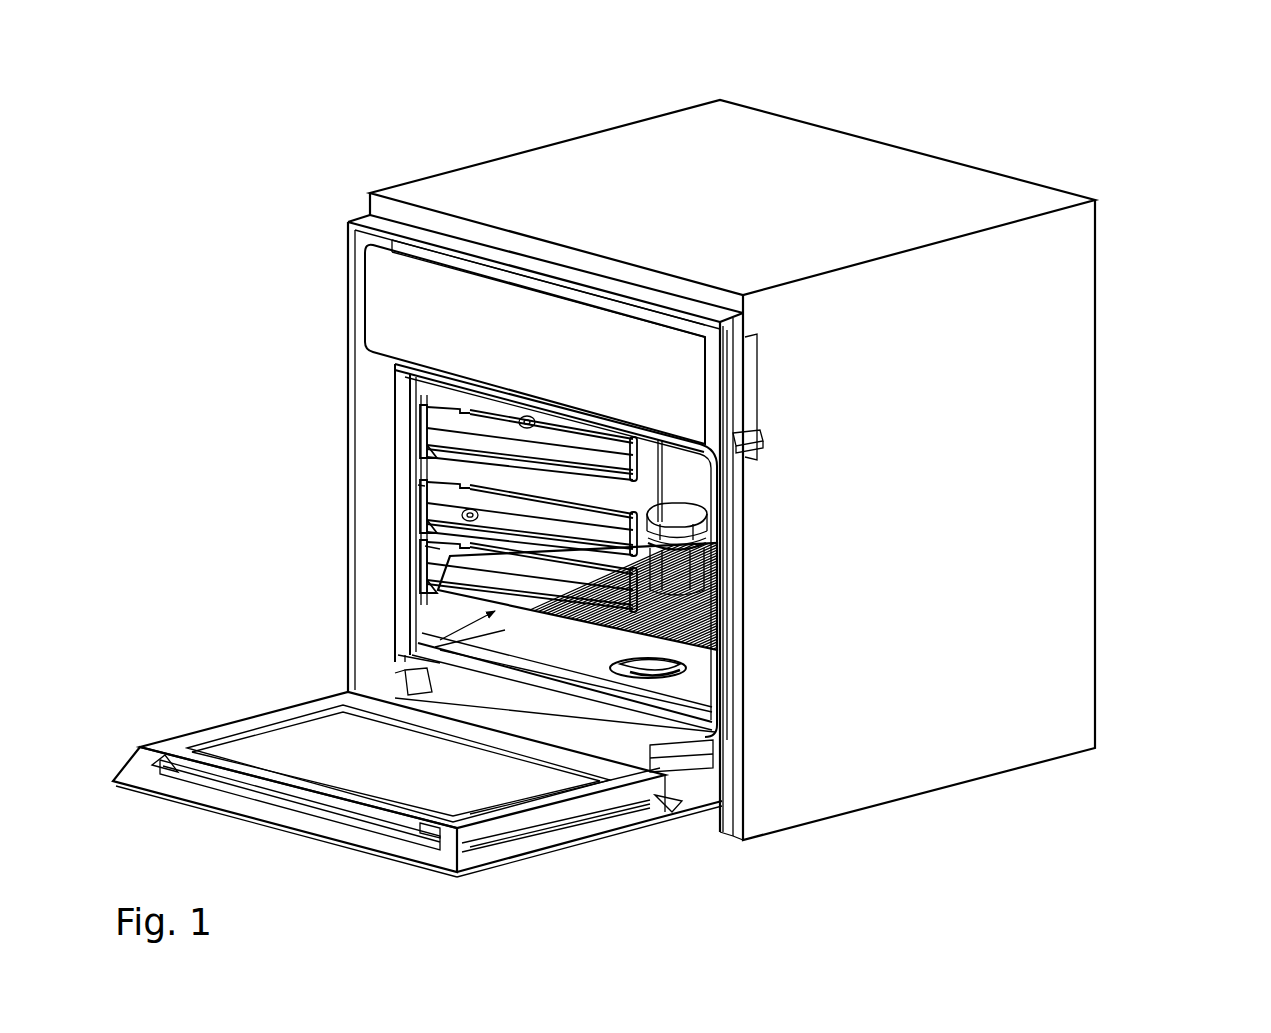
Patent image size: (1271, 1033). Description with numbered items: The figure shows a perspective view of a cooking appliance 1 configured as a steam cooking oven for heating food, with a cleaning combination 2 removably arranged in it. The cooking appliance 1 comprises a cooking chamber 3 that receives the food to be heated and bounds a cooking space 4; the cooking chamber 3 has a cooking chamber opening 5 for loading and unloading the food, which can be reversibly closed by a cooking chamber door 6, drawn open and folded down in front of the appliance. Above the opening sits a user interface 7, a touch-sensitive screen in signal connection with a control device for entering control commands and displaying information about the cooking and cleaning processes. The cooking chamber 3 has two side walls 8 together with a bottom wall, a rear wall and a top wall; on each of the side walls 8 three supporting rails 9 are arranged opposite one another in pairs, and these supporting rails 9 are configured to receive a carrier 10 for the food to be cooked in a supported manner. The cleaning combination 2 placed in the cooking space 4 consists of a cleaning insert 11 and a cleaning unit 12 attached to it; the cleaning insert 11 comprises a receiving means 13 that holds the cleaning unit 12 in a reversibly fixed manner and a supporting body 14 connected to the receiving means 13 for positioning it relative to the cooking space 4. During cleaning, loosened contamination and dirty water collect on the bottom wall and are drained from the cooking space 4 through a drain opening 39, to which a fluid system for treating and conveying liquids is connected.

The cooking appliance 1 is at (906, 126).
The cleaning combination 2 is at (430, 548).
The cooking chamber 3 is at (420, 495).
The cooking space 4 is at (472, 650).
The cooking chamber opening 5 is at (420, 475).
The cooking chamber door 6 is at (280, 716).
The user interface 7 is at (393, 308).
The side walls 8 is at (422, 397).
The supporting rails 9 is at (448, 490).
The carrier for food to be cooked 10 is at (440, 634).
The cleaning insert 11 is at (720, 647).
The cleaning unit 12 is at (700, 568).
The receiving means 13 is at (720, 602).
The supporting body 14 is at (706, 533).
The drain opening 39 is at (688, 664).